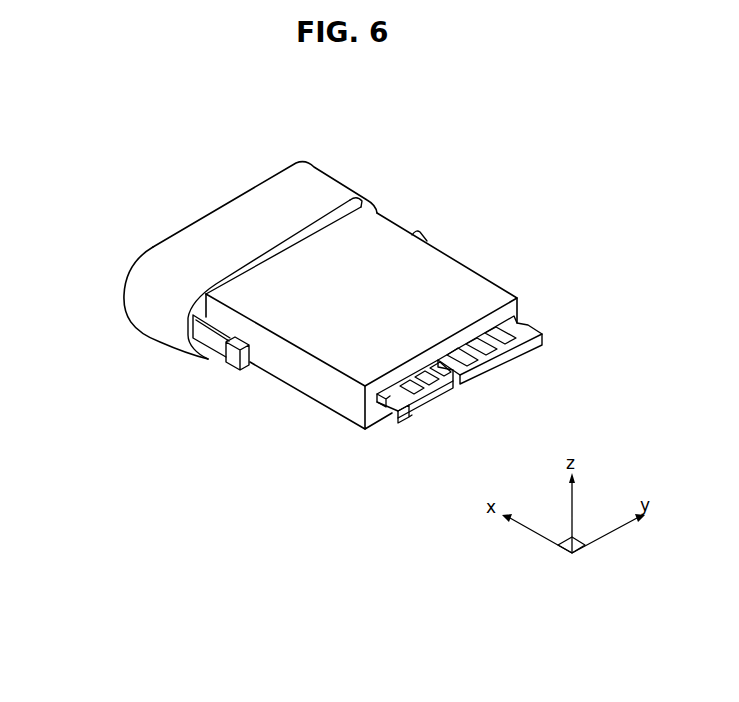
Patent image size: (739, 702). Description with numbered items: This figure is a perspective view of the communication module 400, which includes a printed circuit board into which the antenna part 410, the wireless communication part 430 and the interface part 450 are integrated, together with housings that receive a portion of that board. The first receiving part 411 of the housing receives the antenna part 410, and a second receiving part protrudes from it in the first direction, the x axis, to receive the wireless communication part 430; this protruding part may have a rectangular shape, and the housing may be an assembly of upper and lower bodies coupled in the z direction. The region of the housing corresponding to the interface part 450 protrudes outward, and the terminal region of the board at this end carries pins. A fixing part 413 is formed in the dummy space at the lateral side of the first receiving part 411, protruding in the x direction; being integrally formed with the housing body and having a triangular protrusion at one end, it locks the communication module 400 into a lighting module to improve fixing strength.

The communication module 400 is at (83, 104).
The antenna part 410 is at (220, 221).
The first receiving part 411 is at (275, 195).
The fixing part 413 is at (232, 372).
The wireless communication part 430 is at (462, 262).
The interface part 450 is at (531, 376).